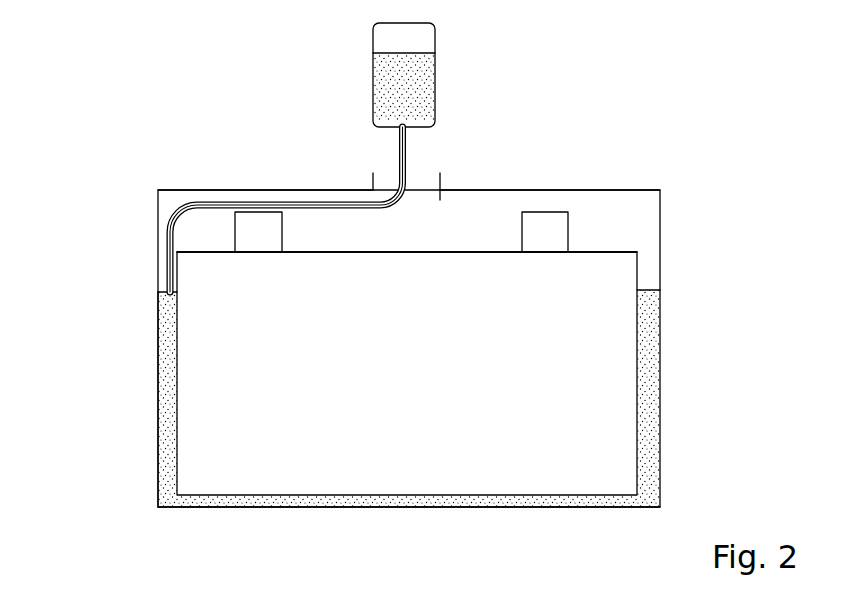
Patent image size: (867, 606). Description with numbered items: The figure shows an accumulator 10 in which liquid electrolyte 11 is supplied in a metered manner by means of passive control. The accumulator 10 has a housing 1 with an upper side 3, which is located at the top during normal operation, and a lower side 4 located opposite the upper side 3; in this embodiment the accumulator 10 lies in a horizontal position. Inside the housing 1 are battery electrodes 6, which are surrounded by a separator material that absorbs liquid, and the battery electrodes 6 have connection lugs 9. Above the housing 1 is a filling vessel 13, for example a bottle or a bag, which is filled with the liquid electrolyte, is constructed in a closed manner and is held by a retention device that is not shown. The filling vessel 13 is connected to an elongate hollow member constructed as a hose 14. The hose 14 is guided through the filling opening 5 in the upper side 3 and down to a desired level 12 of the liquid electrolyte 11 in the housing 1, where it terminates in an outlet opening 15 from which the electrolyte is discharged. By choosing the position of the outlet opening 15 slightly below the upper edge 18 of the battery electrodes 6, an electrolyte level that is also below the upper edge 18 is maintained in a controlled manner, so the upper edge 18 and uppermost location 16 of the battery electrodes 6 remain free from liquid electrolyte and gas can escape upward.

The accumulator 10 is at (105, 185).
The housing 1 is at (158, 398).
The upper side 3 is at (208, 190).
The lower side 4 is at (237, 507).
The filling opening 5 is at (437, 178).
The battery electrodes 6 is at (323, 478).
The connection lugs 9 is at (259, 222).
The liquid electrolyte 11 is at (650, 327).
The level 12 is at (647, 288).
The filling vessel 13 is at (436, 40).
The hose 14 is at (311, 207).
The outlet opening 15 is at (162, 299).
The uppermost location 16 is at (588, 250).
The upper edge 18 is at (588, 250).